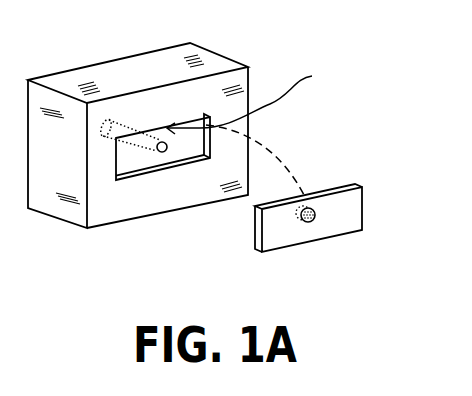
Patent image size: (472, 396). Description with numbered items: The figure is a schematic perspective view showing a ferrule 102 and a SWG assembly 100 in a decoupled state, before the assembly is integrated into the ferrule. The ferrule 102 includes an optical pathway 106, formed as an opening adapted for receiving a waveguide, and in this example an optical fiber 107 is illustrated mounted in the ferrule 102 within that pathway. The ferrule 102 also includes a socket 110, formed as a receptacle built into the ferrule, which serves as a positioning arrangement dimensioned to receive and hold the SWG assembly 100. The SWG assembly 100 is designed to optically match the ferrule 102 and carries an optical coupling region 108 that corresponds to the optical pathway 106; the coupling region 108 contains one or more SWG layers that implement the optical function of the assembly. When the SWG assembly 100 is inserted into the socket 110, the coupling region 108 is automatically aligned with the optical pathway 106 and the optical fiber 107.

The SWG assembly 100 is at (338, 171).
The ferrule 102 is at (122, 42).
The optical pathway 106 is at (147, 130).
The optical fiber 107 is at (162, 152).
The optical coupling region 108 is at (311, 222).
The socket 110 is at (256, 99).